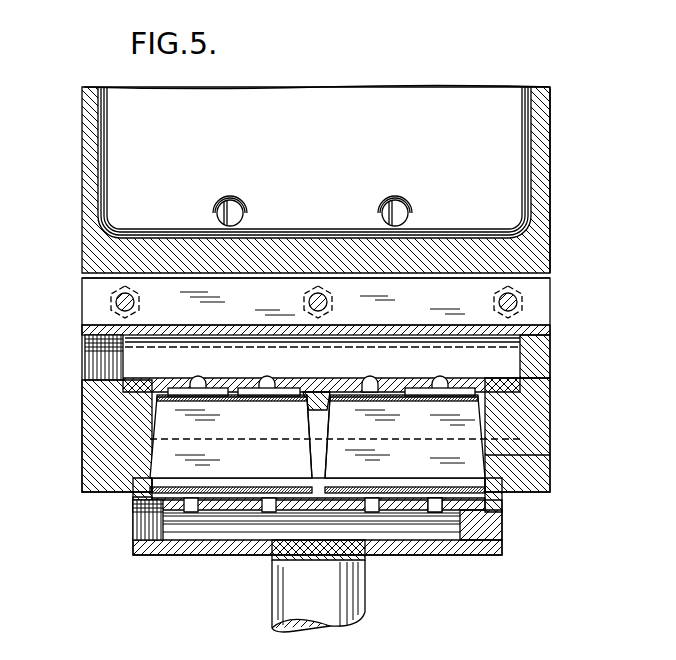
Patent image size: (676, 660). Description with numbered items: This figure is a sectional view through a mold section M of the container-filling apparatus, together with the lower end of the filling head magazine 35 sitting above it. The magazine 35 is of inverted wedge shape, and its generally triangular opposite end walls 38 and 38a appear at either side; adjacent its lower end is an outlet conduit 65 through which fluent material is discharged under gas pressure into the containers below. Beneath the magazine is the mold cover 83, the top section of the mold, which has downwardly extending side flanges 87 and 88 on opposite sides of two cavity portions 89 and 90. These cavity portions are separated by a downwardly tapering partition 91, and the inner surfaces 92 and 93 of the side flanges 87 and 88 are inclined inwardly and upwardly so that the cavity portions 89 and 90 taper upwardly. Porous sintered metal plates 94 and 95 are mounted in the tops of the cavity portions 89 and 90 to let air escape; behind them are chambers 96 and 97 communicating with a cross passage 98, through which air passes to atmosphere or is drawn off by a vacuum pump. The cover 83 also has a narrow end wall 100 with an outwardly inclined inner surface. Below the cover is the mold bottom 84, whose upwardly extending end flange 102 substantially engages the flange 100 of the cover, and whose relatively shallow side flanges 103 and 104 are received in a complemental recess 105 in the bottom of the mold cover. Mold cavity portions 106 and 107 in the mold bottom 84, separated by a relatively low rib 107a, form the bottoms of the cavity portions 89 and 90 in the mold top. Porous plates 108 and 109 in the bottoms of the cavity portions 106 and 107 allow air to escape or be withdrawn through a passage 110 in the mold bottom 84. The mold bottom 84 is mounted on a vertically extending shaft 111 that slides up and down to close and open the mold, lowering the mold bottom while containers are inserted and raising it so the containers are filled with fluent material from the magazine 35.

The magazine 35 is at (556, 134).
The end wall 38 is at (82, 158).
The end wall 38a is at (530, 180).
The outlet conduit 65 is at (235, 201).
The mold cover 83 is at (82, 302).
The cross passage 98 is at (140, 362).
The chamber 96 is at (213, 389).
The chamber 97 is at (285, 390).
The cavity portion 89 is at (316, 398).
The cavity portion 90 is at (458, 391).
The mold section M is at (558, 367).
The side flange 88 is at (537, 393).
The side flange 87 is at (82, 421).
The inner surface 92 is at (160, 421).
The porous metal plate 94 is at (263, 399).
The porous metal plate 95 is at (420, 399).
The end wall 100 is at (515, 421).
The side flange 103 is at (140, 477).
The mold cavity portion 106 is at (221, 487).
The partition 91 is at (318, 459).
The mold cavity portion 107 is at (408, 487).
The inner surface 93 is at (484, 446).
The end flange 102 is at (520, 458).
The recess 105 is at (133, 502).
The side flange 104 is at (503, 498).
The mold bottom 84 is at (503, 530).
The rib 107a is at (313, 500).
The passage 110 is at (183, 535).
The porous plate 108 is at (254, 498).
The porous plate 109 is at (432, 500).
The shaft 111 is at (348, 596).